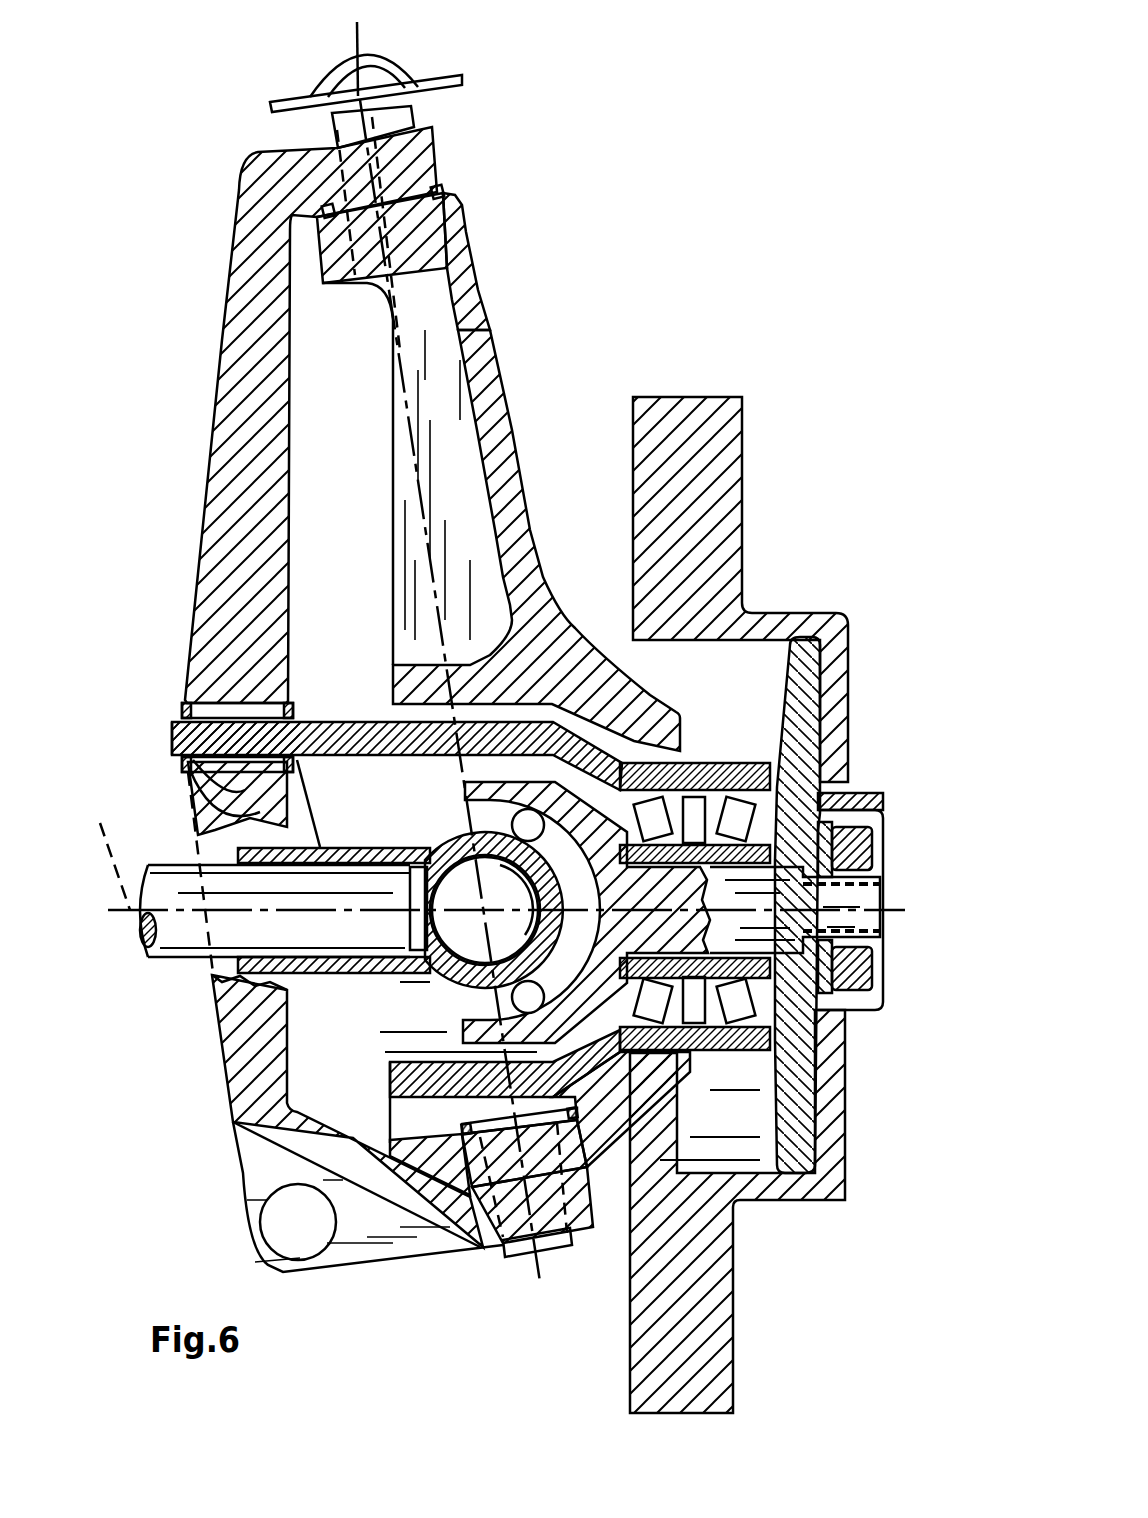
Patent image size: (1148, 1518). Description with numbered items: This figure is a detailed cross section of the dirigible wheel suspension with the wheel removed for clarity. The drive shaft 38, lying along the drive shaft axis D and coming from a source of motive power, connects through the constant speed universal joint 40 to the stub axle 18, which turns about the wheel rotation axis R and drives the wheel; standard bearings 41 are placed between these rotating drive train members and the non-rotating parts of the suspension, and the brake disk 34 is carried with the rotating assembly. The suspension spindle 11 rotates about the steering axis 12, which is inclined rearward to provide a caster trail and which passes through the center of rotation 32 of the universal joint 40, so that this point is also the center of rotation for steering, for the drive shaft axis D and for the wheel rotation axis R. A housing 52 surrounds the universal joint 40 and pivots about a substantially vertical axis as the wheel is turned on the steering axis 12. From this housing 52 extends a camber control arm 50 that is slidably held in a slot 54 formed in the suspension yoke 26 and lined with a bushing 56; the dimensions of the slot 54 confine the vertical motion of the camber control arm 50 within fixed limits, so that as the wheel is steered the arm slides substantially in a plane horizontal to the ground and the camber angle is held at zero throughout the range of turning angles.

The suspension spindle 11 is at (515, 452).
The steering axis 12 is at (482, 325).
The stub axle 18 is at (787, 830).
The suspension yoke 26 is at (212, 441).
The center of rotation 32 is at (481, 914).
The brake disk 34 is at (743, 533).
The drive shaft 38 is at (185, 962).
The constant speed universal joint 40 is at (510, 994).
The bearings 41 is at (698, 765).
The camber control arm 50 is at (172, 722).
The housing 52 is at (503, 728).
The slot 54 is at (175, 740).
The bushing 56 is at (196, 822).
The drive shaft axis D is at (107, 849).
The wheel rotation axis R is at (903, 907).